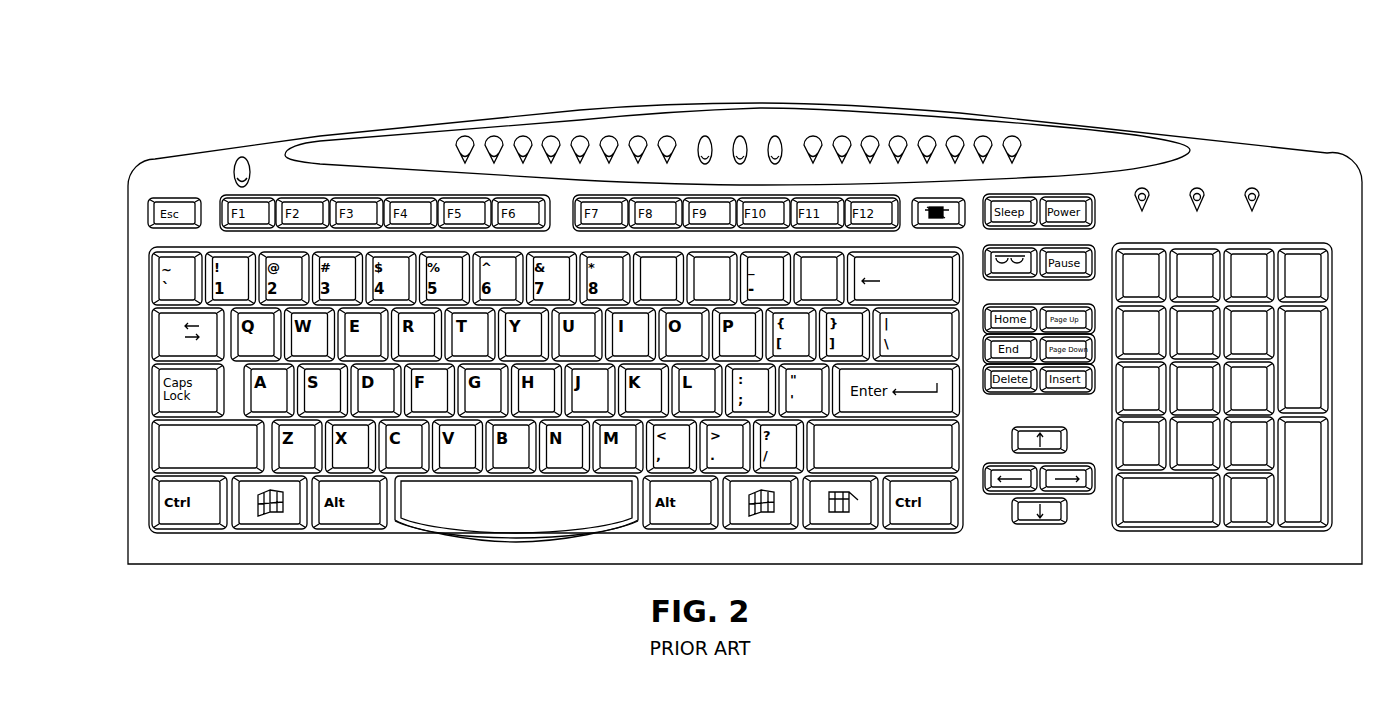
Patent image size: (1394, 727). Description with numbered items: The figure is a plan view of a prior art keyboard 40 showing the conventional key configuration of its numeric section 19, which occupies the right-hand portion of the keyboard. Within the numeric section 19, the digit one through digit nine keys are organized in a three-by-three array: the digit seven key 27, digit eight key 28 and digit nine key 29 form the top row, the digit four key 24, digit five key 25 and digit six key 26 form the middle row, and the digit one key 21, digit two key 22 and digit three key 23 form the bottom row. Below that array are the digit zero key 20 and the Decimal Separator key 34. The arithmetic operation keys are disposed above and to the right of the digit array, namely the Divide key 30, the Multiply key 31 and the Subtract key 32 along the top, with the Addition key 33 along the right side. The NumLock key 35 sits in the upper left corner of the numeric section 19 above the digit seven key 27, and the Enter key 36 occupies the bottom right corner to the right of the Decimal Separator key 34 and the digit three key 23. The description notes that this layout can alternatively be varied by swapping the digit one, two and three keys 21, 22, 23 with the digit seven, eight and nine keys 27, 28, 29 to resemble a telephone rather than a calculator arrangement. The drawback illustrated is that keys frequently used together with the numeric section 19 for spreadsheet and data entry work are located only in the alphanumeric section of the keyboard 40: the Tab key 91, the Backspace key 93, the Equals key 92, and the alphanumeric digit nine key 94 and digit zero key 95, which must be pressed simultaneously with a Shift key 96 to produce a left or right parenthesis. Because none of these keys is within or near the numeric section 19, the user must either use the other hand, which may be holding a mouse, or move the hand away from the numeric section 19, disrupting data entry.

The numeric section 19 is at (1286, 186).
The keyboard 40 is at (677, 97).
The Tab key 91 is at (170, 320).
The Equals key 92 is at (820, 273).
The Backspace key 93 is at (893, 263).
The Digit 9 key 94 is at (662, 265).
The Digit 0 key 95 is at (715, 263).
The Shift key 96 is at (170, 450).
The NumLock key 35 is at (1158, 262).
The Divide key 30 is at (1200, 262).
The Multiply key 31 is at (1263, 294).
The Subtract key 32 is at (1317, 294).
The Digit 7 key 27 is at (1123, 330).
The Digit 8 key 28 is at (1204, 350).
The Digit 9 key 29 is at (1254, 323).
The Addition key 33 is at (1315, 392).
The Digit 4 key 24 is at (1150, 406).
The Digit 5 key 25 is at (1204, 406).
The Digit 6 key 26 is at (1258, 406).
The Digit 1 key 21 is at (1130, 443).
The Digit 2 key 22 is at (1204, 461).
The Digit 3 key 23 is at (1253, 437).
The Enter key 36 is at (1316, 507).
The Digit 0 key 20 is at (1180, 506).
The Decimal Separator key 34 is at (1258, 512).